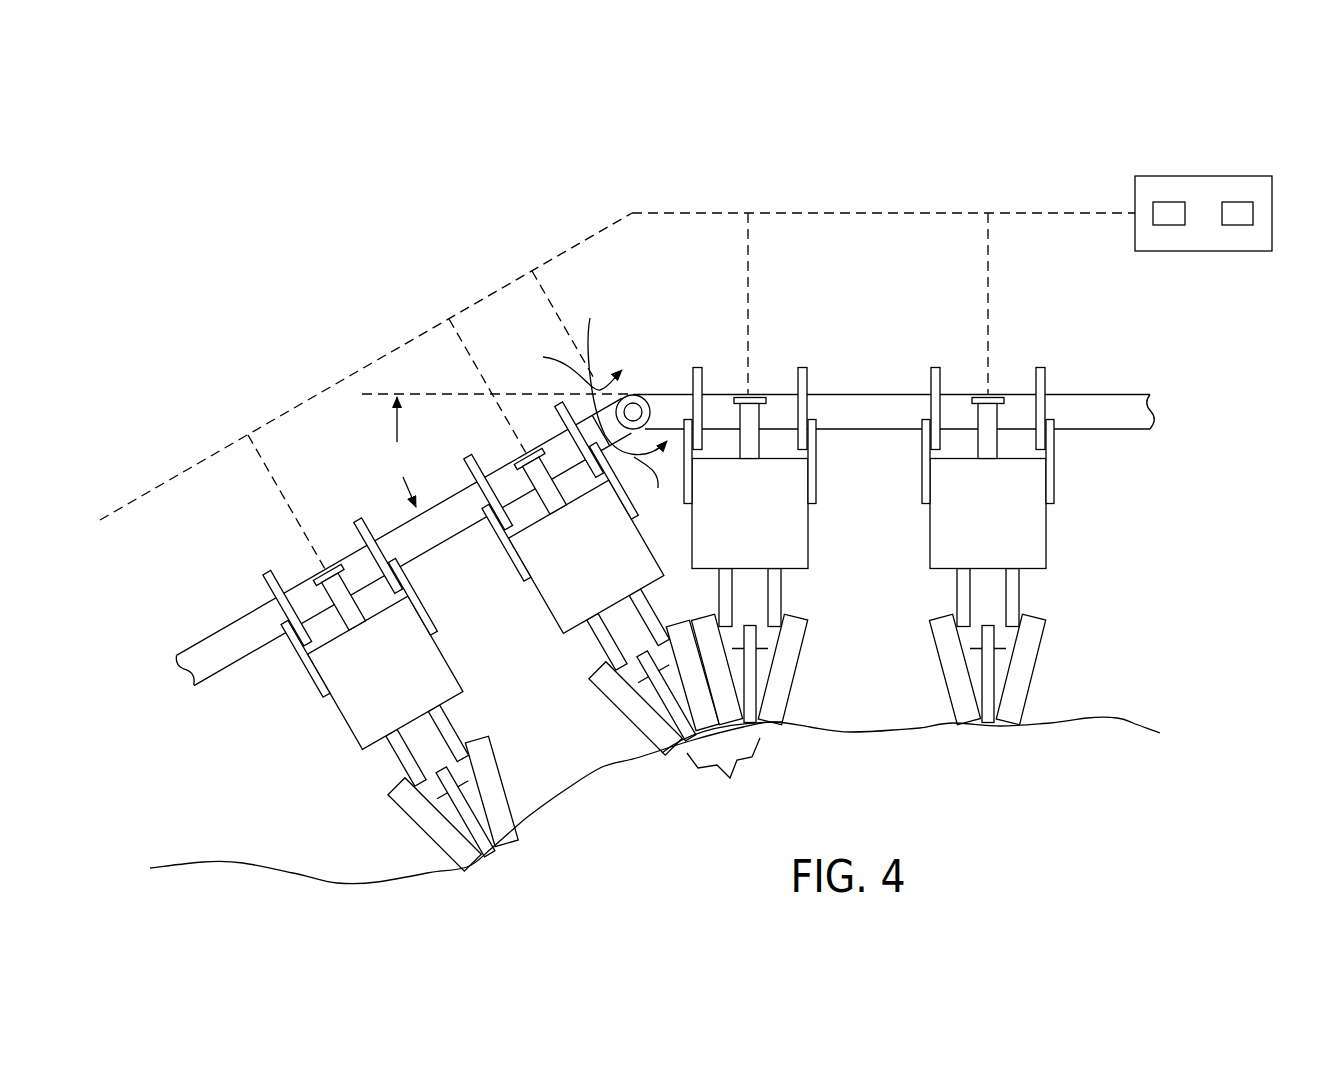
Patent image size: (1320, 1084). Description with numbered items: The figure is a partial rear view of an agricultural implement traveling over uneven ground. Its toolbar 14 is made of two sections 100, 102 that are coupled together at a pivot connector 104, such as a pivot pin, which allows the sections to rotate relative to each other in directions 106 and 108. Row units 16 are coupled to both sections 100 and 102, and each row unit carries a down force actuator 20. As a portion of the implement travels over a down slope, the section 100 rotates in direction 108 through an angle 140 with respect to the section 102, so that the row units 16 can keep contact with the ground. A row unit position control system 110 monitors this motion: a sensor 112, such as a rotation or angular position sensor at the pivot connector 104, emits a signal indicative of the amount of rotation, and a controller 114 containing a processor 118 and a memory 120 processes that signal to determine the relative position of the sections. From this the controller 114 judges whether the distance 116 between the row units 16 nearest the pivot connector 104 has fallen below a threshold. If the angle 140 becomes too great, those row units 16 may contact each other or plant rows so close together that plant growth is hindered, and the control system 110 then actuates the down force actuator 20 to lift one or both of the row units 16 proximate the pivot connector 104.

The toolbar 14 is at (268, 312).
The row unit 16 is at (340, 790).
The down force actuator 20 is at (325, 597).
The section 100 is at (212, 644).
The section 102 is at (1100, 412).
The pivot connector 104 is at (648, 396).
The direction 106 is at (616, 372).
The direction 108 is at (655, 486).
The row unit position control system 110 is at (870, 148).
The sensor 112 is at (559, 366).
The controller 114 is at (1200, 176).
The distance 116 is at (722, 769).
The processor 118 is at (1170, 226).
The memory 120 is at (1238, 226).
The angle 140 is at (497, 450).